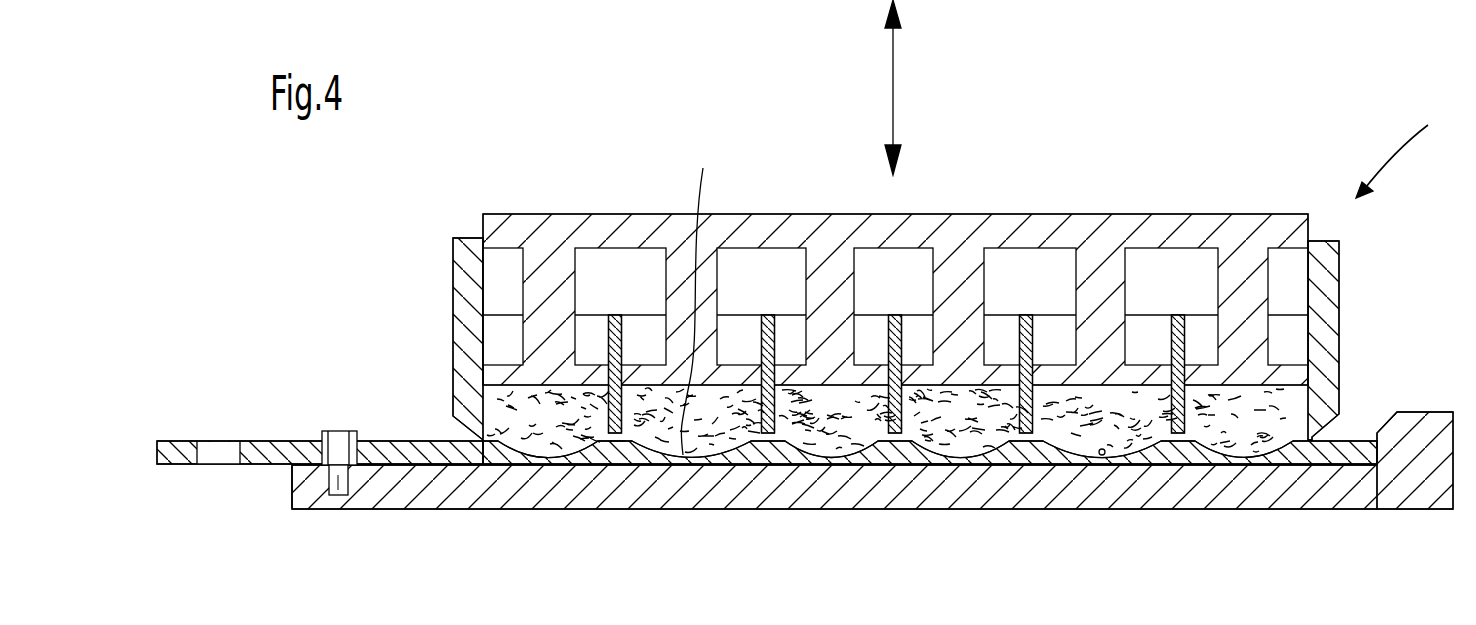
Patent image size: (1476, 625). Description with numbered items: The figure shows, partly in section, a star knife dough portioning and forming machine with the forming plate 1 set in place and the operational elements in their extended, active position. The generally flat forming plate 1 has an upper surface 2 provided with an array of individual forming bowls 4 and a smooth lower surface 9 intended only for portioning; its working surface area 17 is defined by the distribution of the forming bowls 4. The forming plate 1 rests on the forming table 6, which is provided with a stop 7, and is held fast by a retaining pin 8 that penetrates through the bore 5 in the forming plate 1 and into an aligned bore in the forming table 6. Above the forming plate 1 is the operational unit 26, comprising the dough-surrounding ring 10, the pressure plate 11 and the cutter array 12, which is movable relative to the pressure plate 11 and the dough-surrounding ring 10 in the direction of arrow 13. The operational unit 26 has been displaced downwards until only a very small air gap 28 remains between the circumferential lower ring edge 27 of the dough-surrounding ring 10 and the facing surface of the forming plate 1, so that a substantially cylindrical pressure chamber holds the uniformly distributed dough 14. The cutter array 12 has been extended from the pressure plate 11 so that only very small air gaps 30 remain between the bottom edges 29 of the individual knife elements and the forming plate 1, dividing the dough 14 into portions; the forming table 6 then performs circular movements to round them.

The forming plate 1 is at (427, 470).
The upper surface 2 is at (1360, 440).
The forming bowls 4 is at (1104, 455).
The bore 5 is at (322, 447).
The forming table 6 is at (707, 483).
The stop 7 is at (1433, 425).
The retaining pin 8 is at (345, 435).
The lower surface 9 is at (940, 464).
The dough-surrounding ring 10 is at (463, 252).
The pressure plate 11 is at (557, 230).
The cutter array 12 is at (618, 312).
The arrow 13 is at (893, 84).
The dough 14 is at (551, 433).
The working surface area 17 is at (698, 296).
The operational unit 26 is at (1406, 152).
The circumferential lower ring edge 27 is at (485, 441).
The air gap 28 is at (1313, 440).
The bottom edges 29 is at (617, 441).
The air gaps 30 is at (768, 433).